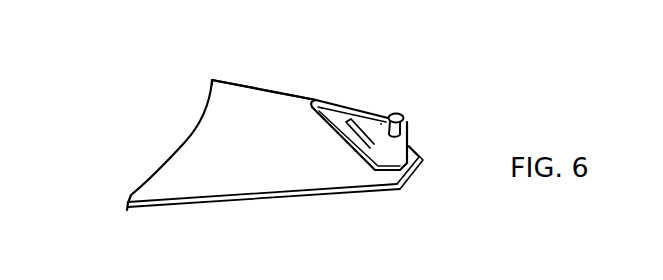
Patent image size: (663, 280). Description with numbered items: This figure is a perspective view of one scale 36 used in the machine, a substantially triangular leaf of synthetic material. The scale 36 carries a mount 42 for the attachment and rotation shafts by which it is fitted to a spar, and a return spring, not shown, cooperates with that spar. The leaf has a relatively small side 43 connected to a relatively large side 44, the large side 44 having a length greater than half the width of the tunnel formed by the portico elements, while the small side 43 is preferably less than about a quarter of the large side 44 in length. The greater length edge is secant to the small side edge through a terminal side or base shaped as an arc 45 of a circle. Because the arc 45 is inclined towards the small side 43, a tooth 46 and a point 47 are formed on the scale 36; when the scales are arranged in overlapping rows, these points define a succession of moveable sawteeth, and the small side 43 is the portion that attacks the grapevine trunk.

The scale 36 is at (280, 138).
The mount 42 is at (408, 121).
The small side 43 is at (264, 91).
The large side 44 is at (267, 199).
The arc 45 is at (187, 139).
The tooth 46 is at (212, 80).
The point 47 is at (127, 209).